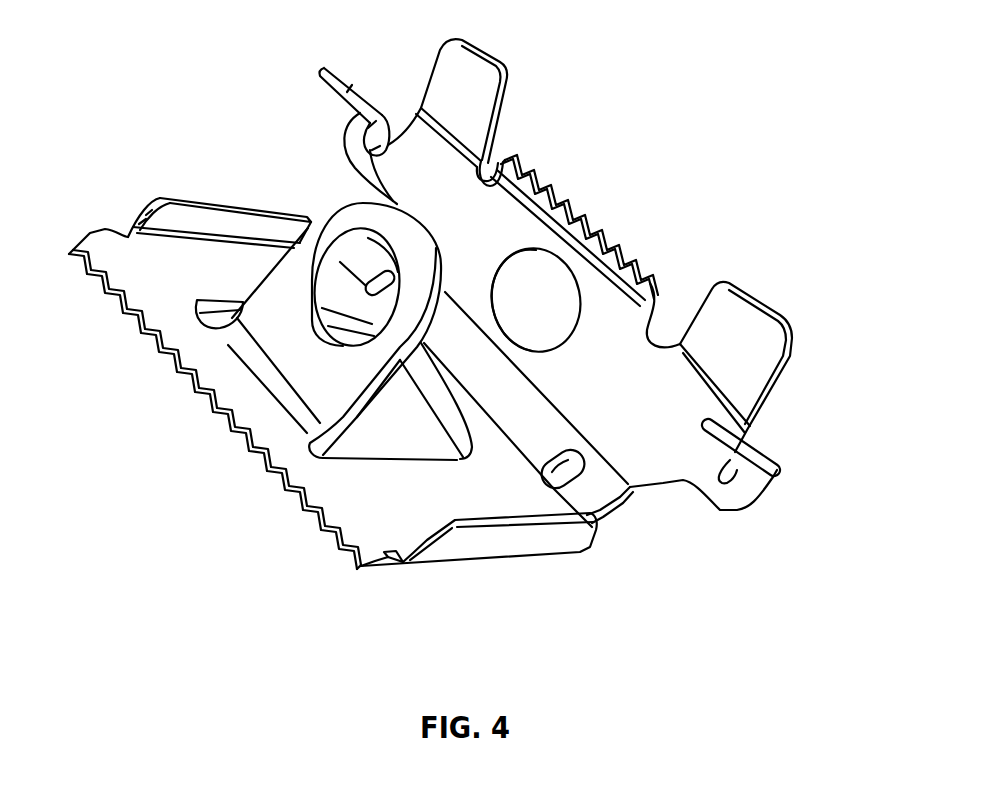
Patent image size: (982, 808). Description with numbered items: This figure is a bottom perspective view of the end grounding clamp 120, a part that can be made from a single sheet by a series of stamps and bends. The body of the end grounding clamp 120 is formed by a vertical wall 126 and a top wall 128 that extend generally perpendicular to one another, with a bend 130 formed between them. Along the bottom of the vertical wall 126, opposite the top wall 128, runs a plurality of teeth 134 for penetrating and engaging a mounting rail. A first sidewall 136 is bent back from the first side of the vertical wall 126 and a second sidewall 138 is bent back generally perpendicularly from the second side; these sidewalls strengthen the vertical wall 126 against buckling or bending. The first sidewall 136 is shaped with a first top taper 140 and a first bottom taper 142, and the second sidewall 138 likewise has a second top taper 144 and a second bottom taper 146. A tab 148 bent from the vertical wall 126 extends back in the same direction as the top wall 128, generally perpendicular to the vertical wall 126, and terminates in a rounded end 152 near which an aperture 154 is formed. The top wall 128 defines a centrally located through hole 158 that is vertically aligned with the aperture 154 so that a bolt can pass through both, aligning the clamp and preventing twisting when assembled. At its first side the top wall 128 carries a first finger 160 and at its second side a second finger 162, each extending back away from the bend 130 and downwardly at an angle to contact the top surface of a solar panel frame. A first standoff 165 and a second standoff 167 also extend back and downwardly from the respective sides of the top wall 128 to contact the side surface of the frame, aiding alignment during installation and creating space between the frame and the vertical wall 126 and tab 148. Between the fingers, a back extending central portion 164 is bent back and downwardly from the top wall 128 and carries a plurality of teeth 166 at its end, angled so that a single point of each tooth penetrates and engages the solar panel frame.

The end grounding clamp 120 is at (735, 90).
The vertical wall 126 is at (473, 543).
The top wall 128 is at (655, 404).
The bend 130 is at (449, 336).
The teeth 134 is at (170, 350).
The first sidewall 136 is at (205, 200).
The second sidewall 138 is at (470, 494).
The first top taper 140 is at (312, 217).
The first bottom taper 142 is at (133, 220).
The second top taper 144 is at (626, 507).
The second bottom taper 146 is at (403, 560).
The tab 148 is at (408, 203).
The rounded end 152 is at (401, 202).
The aperture 154 is at (337, 296).
The through hole 158 is at (580, 260).
The first finger 160 is at (484, 47).
The second finger 162 is at (770, 310).
The back extending central portion 164 is at (545, 205).
The first standoff 165 is at (325, 65).
The teeth 166 is at (526, 178).
The second standoff 167 is at (767, 452).